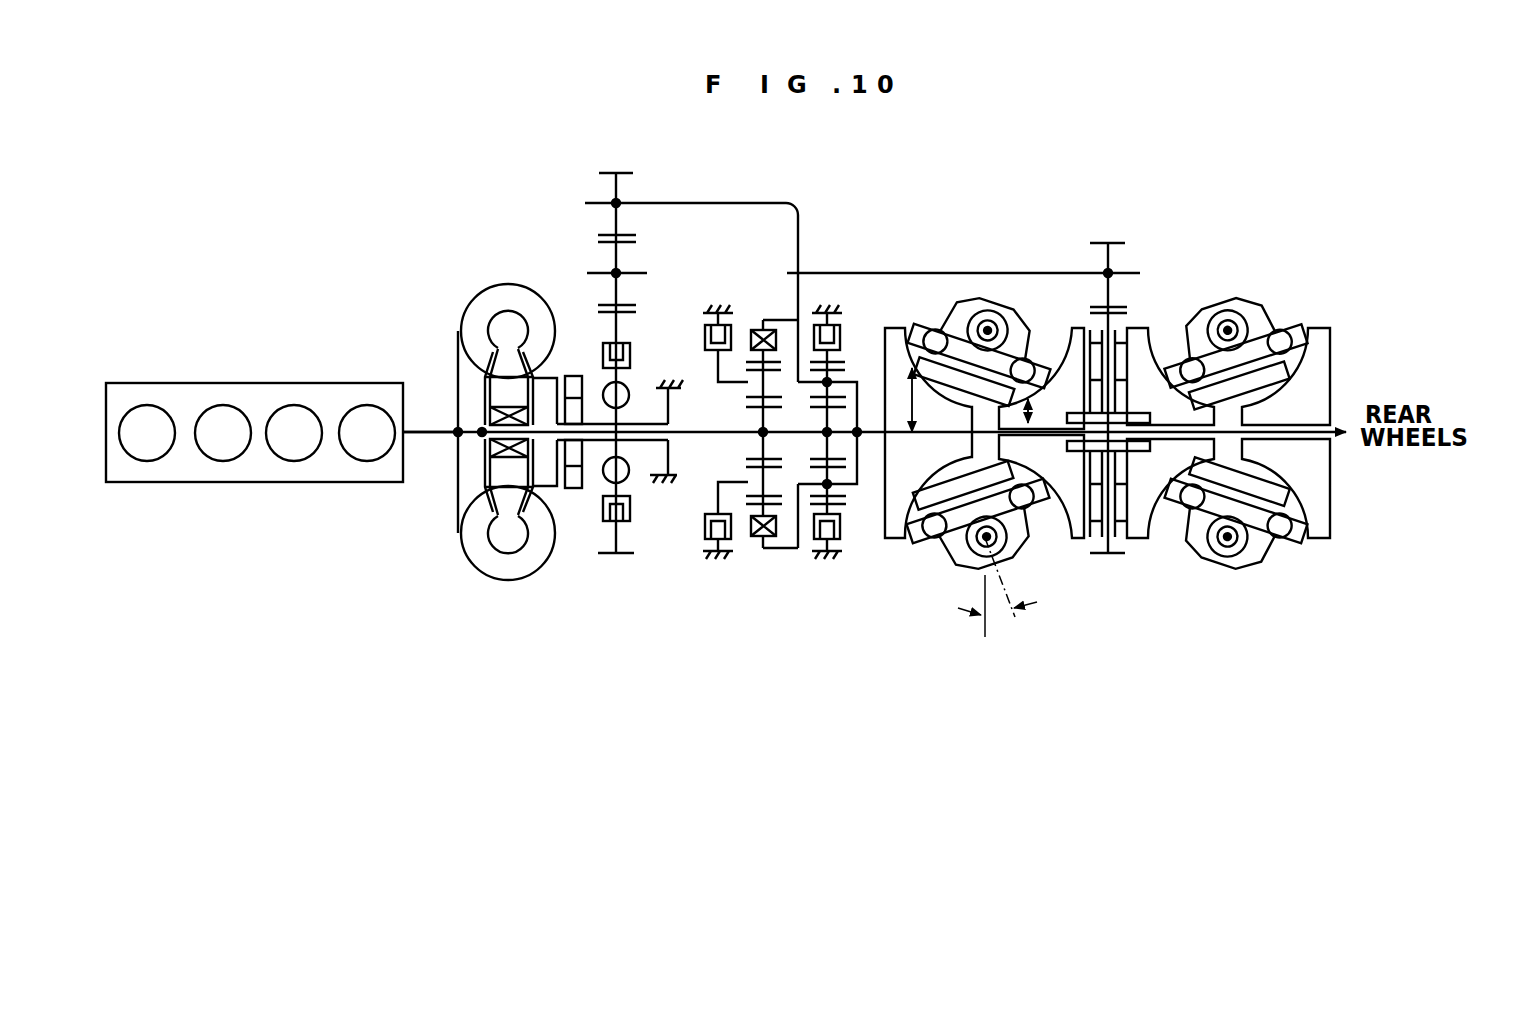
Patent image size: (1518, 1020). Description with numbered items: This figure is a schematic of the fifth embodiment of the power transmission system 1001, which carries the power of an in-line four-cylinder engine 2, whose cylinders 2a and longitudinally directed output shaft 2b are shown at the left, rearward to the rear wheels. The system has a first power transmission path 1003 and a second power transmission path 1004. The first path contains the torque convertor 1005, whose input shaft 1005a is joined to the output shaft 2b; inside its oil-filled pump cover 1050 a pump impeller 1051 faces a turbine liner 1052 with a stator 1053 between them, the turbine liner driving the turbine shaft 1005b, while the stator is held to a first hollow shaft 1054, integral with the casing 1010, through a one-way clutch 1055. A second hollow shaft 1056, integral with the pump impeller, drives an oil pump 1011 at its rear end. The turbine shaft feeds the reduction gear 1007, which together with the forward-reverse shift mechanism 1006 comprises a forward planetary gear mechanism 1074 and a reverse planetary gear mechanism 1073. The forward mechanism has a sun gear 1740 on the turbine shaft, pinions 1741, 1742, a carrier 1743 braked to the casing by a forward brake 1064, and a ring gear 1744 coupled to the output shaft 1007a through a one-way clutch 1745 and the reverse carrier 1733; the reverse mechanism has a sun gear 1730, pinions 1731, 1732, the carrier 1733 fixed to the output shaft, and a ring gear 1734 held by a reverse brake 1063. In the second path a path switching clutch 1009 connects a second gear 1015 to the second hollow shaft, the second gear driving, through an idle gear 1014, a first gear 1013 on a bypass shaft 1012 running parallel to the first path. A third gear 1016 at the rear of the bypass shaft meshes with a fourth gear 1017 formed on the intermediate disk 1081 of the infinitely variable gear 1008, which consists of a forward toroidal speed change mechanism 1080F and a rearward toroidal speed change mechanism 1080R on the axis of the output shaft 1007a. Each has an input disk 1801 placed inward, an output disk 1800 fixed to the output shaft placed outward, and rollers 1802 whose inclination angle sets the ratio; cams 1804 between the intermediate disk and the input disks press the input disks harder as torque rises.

The engine 2 is at (282, 428).
The cylinders 2a is at (216, 461).
The output shaft 2b is at (412, 420).
The power transmission system 1001 is at (822, 397).
The first power transmission path 1003 is at (822, 397).
The second power transmission path 1004 is at (914, 429).
The torque convertor 1005 is at (443, 474).
The input shaft 1005a is at (455, 428).
The turbine shaft 1005b is at (600, 442).
The forward-reverse shift mechanism 1006 is at (841, 441).
The reduction gear 1007 is at (853, 429).
The output shaft 1007a is at (892, 440).
The infinitely variable gear 1008 is at (1198, 436).
The path switching clutch 1009 is at (565, 378).
The casing 1010 is at (666, 385).
The oil pump 1011 is at (557, 383).
The bypass shaft 1012 is at (753, 203).
The first gear 1013 is at (631, 172).
The idle gear 1014 is at (598, 242).
The second gear 1015 is at (603, 345).
The third gear 1016 is at (1125, 243).
The fourth gear 1017 is at (1128, 317).
The pump cover 1050 is at (454, 498).
The pump impeller 1051 is at (521, 570).
The turbine liner 1052 is at (484, 575).
The stator 1053 is at (460, 535).
The first hollow shaft 1054 is at (572, 490).
The one-way clutch 1055 is at (456, 470).
The second hollow shaft 1056 is at (607, 522).
The reverse brake 1063 is at (848, 326).
The forward brake 1064 is at (700, 310).
The reverse planetary gear mechanism 1073 is at (933, 280).
The forward planetary gear mechanism 1074 is at (803, 272).
The forward toroidal speed change mechanism 1080F is at (1120, 490).
The rearward toroidal speed change mechanism 1080R is at (1198, 447).
The intermediate disk 1081 is at (1110, 556).
The sun gear 1730 is at (850, 505).
The pinion 1731 is at (845, 553).
The pinion 1732 is at (829, 305).
The carrier 1733 is at (798, 549).
The ring gear 1734 is at (859, 351).
The sun gear 1740 is at (745, 462).
The pinion 1741 is at (734, 541).
The pinion 1742 is at (716, 376).
The carrier 1743 is at (718, 384).
The ring gear 1744 is at (753, 328).
The one-way clutch 1745 is at (752, 538).
The output disk 1800 is at (903, 545).
The input disk 1801 is at (1050, 542).
The rollers 1802 is at (1044, 337).
The cams 1804 is at (1146, 540).